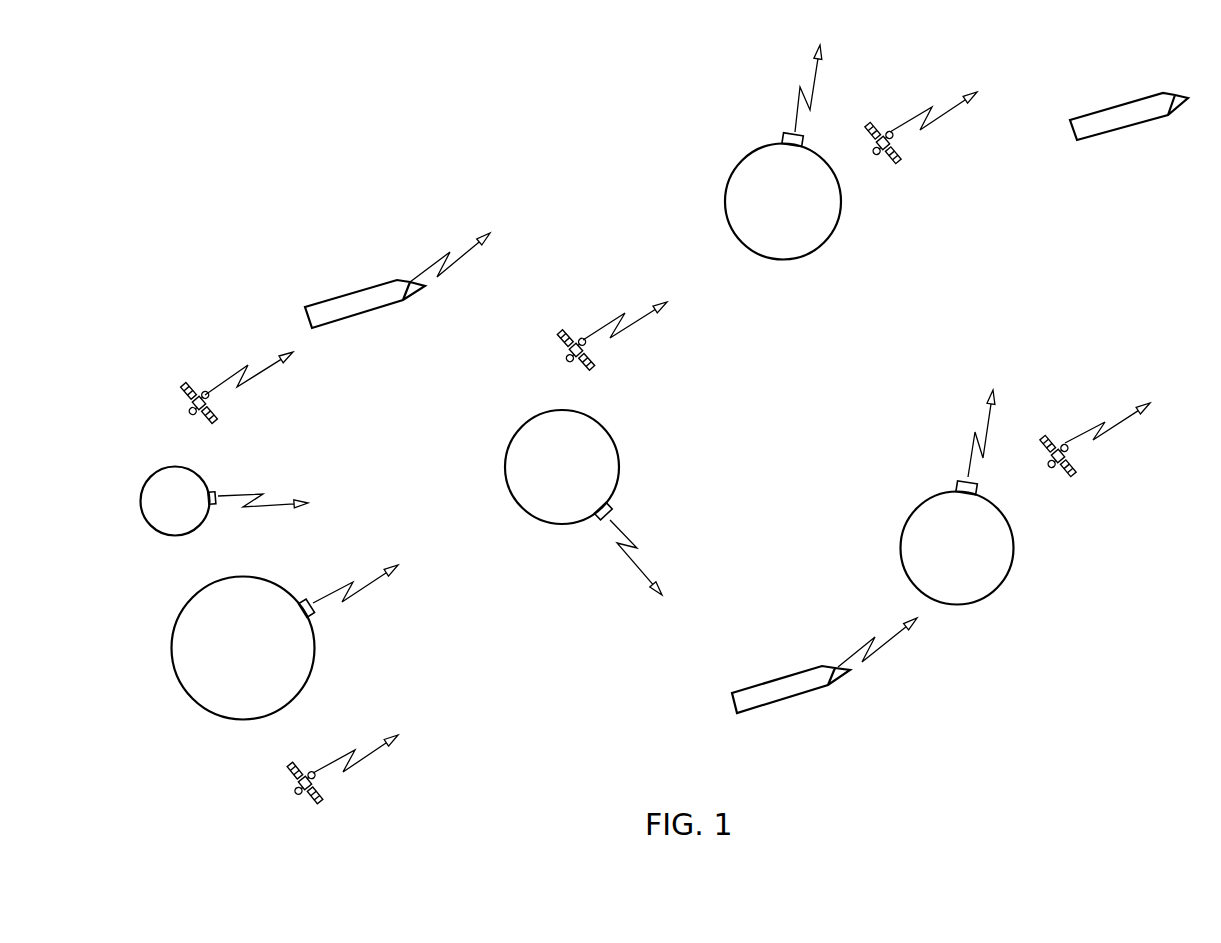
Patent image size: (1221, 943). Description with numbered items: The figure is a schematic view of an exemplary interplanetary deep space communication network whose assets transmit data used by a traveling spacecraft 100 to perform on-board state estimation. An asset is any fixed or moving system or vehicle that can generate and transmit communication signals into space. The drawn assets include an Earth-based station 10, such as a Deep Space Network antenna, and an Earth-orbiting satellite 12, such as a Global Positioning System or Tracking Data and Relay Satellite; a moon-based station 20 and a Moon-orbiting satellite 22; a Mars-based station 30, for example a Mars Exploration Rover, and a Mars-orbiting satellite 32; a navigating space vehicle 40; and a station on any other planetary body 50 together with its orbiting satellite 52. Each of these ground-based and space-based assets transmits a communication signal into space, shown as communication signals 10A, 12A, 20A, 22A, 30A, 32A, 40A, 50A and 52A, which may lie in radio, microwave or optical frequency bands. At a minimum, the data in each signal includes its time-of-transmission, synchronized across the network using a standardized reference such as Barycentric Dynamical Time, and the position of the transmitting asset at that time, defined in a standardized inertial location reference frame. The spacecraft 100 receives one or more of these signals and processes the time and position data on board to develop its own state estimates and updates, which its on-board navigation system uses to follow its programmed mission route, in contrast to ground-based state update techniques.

The Earth-based station 10 is at (312, 617).
The communication signal 10A is at (365, 590).
The Earth-orbiting satellite 12 is at (327, 802).
The communication signal 12A is at (368, 760).
The moon-based station 20 is at (212, 505).
The communication signal 20A is at (263, 494).
The Moon-orbiting satellite 22 is at (227, 420).
The communication signal 22A is at (260, 375).
The Mars-based station 30 is at (592, 523).
The communication signal 30A is at (625, 532).
The Mars-orbiting satellite 32 is at (598, 362).
The communication signal 32A is at (632, 323).
The navigating space vehicle 40 is at (378, 310).
The communication signal 40A is at (423, 270).
The planetary-based station 50 is at (780, 138).
The communication signal 50A is at (797, 110).
The orbiting satellite 52 is at (907, 160).
The communication signal 52A is at (943, 115).
The traveling spacecraft 100 is at (1120, 105).